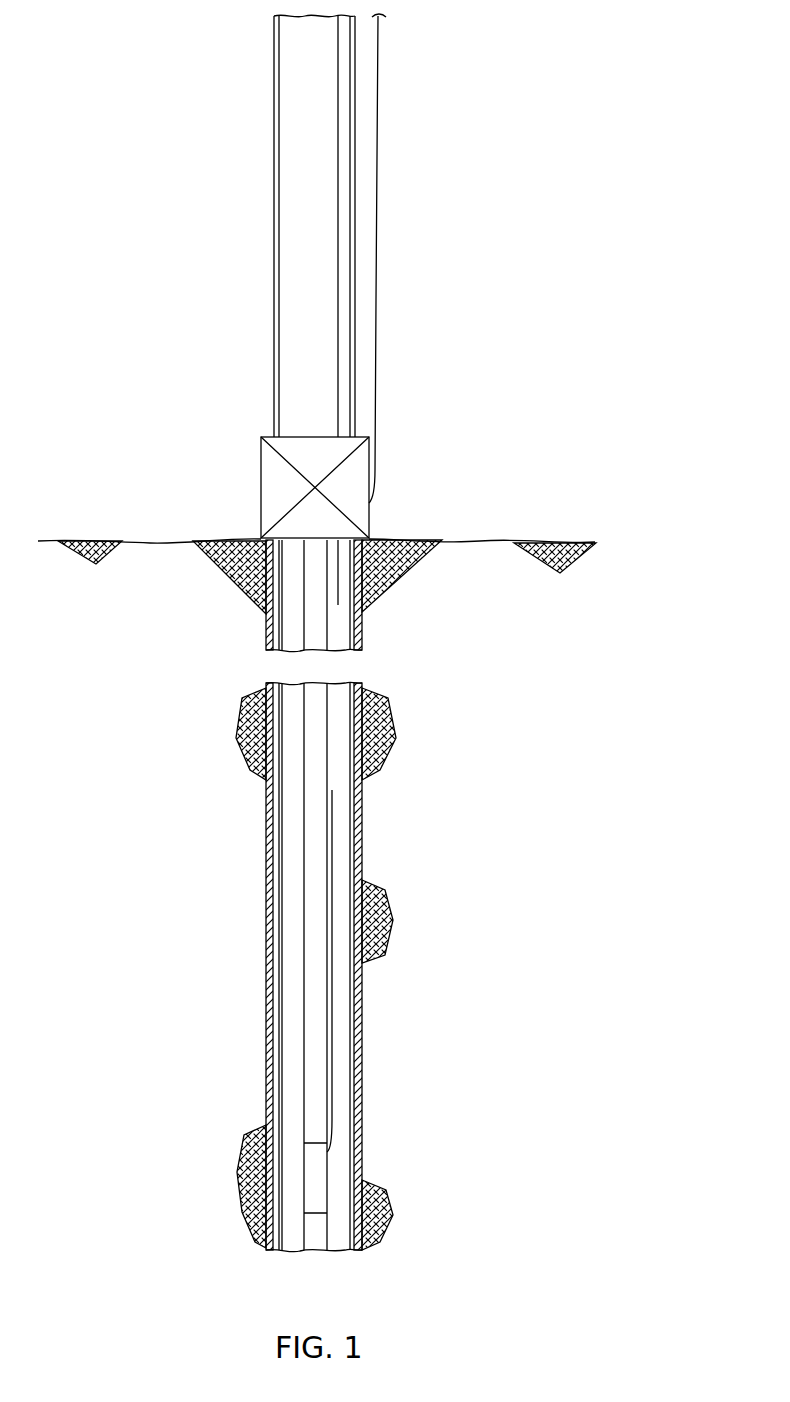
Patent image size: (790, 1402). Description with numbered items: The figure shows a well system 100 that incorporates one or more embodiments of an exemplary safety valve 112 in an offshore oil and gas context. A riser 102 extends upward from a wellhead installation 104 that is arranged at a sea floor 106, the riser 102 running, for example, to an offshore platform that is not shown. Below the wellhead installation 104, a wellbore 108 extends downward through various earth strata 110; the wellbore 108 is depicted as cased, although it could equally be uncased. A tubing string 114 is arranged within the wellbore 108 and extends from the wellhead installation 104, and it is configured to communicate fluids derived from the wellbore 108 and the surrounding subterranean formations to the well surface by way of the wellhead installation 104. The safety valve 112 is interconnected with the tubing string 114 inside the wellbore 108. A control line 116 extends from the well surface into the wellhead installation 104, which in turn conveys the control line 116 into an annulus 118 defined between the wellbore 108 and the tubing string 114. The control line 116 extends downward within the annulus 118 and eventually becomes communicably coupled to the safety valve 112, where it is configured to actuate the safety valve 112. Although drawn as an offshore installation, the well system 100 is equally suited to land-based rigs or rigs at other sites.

The well system 100 is at (581, 363).
The riser 102 is at (274, 238).
The wellhead installation 104 is at (261, 490).
The sea floor 106 is at (467, 543).
The wellbore 108 is at (266, 618).
The earth strata 110 is at (466, 769).
The safety valve 112 is at (327, 1185).
The tubing string 114 is at (303, 835).
The control line 116 is at (377, 126).
The annulus 118 is at (291, 1031).